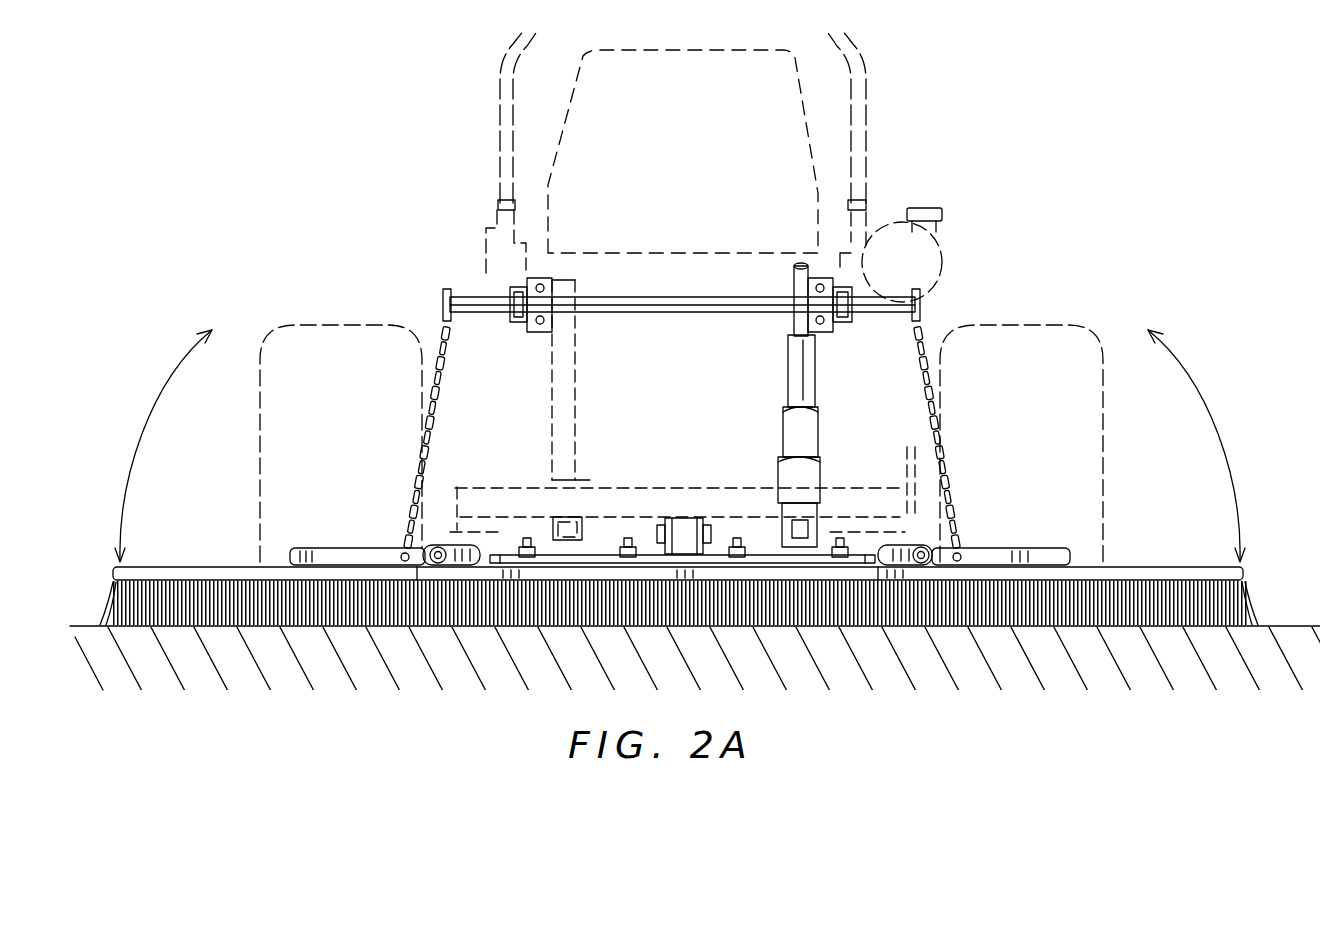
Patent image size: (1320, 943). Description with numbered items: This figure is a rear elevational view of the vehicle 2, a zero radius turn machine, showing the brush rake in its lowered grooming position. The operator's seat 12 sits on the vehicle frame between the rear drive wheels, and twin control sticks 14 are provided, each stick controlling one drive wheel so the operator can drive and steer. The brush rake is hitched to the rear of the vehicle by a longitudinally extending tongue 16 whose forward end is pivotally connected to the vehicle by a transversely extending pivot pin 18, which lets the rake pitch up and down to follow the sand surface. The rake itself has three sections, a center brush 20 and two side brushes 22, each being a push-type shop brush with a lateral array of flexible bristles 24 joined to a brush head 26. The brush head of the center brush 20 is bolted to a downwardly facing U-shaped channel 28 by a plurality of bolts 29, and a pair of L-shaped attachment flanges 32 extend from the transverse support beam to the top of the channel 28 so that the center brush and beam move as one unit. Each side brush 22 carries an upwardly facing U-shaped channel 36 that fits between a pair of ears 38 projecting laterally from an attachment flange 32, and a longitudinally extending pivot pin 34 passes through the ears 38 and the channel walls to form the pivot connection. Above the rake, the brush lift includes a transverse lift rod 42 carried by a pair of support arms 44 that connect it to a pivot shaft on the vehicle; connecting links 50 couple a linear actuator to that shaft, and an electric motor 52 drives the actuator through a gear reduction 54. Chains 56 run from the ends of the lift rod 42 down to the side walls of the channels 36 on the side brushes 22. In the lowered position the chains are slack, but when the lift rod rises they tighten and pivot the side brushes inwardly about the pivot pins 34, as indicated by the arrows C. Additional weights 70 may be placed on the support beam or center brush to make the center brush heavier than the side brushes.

The vehicle 2 is at (950, 135).
The seat 12 is at (695, 148).
The control sticks 14 is at (498, 97).
The tongue 16 is at (694, 556).
The pivot pin 18 is at (707, 521).
The center brush 20 is at (534, 636).
The side brushes 22 is at (204, 558).
The bristles 24 is at (1253, 602).
The brush head 26 is at (1153, 565).
The U-shaped channel 28 is at (748, 580).
The bolts 29 is at (630, 538).
The attachment flanges 32 is at (491, 547).
The pivot pin 34 is at (441, 548).
The U-shaped channel 36 is at (327, 547).
The ears 38 is at (462, 547).
The lift rod 42 is at (658, 297).
The support arms 44 is at (514, 322).
The connecting links 50 is at (792, 270).
The electric motor 52 is at (785, 415).
The gear reduction 54 is at (820, 468).
The chains 56 is at (437, 406).
The additional weights 70 is at (593, 548).
The arrows C is at (160, 395).